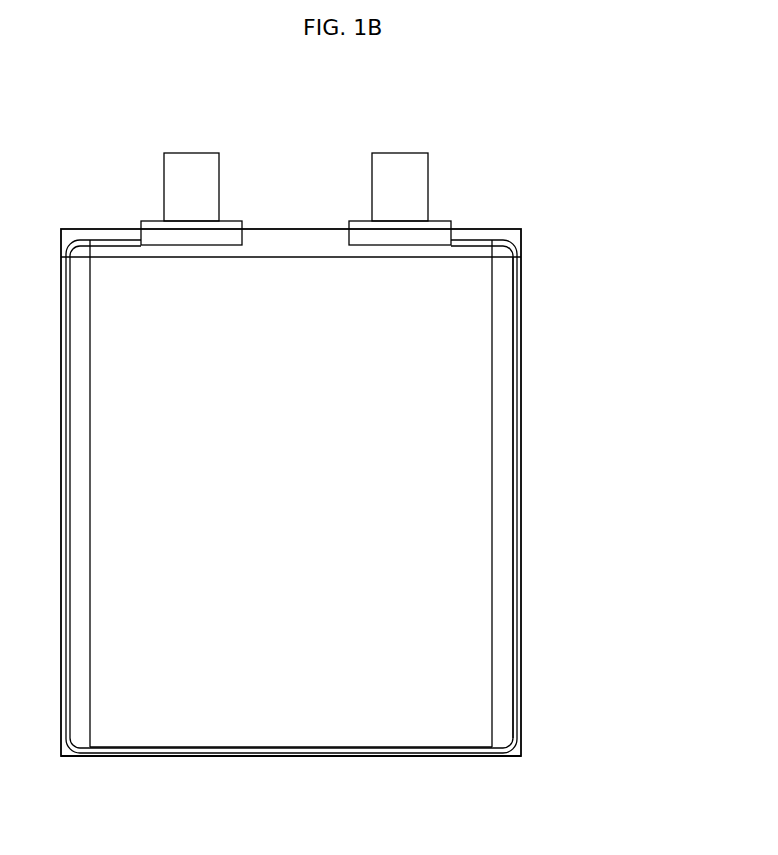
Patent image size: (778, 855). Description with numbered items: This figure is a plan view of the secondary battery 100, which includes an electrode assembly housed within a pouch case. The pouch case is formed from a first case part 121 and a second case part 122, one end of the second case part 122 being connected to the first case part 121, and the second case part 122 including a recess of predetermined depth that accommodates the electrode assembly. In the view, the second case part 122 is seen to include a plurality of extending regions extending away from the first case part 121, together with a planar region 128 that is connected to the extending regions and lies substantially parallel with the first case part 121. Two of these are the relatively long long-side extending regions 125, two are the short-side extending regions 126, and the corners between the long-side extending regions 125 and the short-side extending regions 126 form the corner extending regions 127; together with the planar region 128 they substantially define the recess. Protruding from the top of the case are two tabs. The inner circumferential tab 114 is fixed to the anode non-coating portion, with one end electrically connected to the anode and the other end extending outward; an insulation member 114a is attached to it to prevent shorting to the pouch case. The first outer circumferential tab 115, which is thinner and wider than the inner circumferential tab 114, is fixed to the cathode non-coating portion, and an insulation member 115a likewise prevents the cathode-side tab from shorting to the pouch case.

The secondary battery 100 is at (572, 157).
The inner circumferential tab 114 is at (192, 160).
The insulation member 114a is at (230, 225).
The first outer circumferential tab 115 is at (402, 160).
The insulation member 115a is at (437, 225).
The first case part 121 is at (94, 232).
The second case part 122 is at (522, 758).
The long-side extending region 125 is at (515, 375).
The short-side extending region 126 is at (480, 242).
The corner extending region 127 is at (513, 243).
The planar region 128 is at (478, 665).